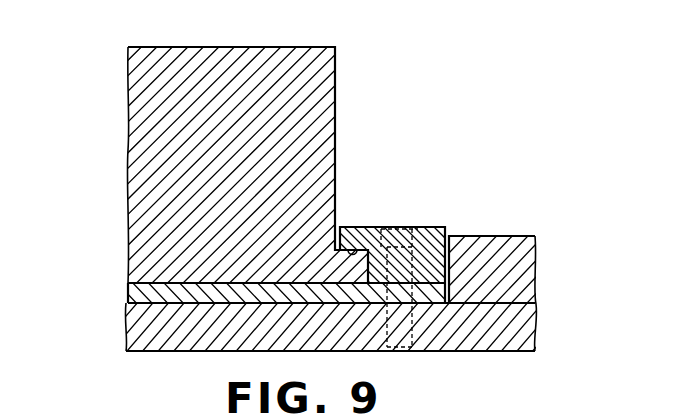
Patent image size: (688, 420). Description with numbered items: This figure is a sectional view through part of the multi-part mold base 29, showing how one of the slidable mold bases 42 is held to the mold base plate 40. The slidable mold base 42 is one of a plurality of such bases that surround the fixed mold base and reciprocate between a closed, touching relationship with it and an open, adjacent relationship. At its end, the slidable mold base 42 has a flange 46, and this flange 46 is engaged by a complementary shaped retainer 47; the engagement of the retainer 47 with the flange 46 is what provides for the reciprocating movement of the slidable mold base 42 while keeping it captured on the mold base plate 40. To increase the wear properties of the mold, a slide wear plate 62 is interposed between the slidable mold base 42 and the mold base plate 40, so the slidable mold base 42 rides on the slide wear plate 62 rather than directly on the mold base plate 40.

The slidable mold base 42 is at (142, 153).
The slide wear plate 62 is at (138, 290).
The mold base plate 40 is at (167, 338).
The retainer 47 is at (435, 227).
The flange 46 is at (360, 250).
The multi-part mold base 29 is at (444, 354).